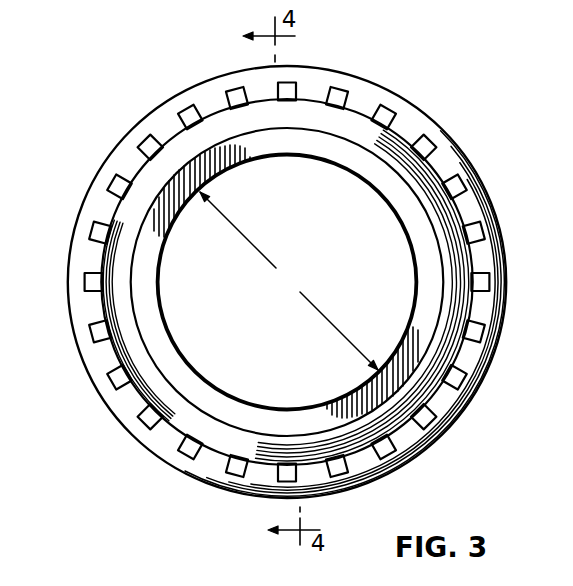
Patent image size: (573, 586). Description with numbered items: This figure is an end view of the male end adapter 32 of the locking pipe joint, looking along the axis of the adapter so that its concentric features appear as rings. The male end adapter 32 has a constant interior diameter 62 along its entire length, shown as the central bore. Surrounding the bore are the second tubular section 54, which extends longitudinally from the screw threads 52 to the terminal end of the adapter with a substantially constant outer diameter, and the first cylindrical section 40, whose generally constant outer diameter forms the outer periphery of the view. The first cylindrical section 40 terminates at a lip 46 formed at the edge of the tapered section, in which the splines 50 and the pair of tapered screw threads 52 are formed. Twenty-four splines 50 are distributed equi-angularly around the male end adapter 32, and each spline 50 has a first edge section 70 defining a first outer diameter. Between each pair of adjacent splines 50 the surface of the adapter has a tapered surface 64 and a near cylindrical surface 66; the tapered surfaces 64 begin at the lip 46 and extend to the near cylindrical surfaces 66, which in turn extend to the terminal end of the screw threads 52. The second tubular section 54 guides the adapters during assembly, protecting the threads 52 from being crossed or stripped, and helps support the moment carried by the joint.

The male end adapter 32 is at (127, 101).
The first cylindrical section 40 is at (496, 358).
The lip 46 is at (82, 212).
The splines 50 is at (437, 141).
The tapered screw threads 52 is at (160, 383).
The second tubular section 54 is at (440, 264).
The interior diameter 62 is at (289, 281).
The tapered surface 64 is at (372, 101).
The near cylindrical surface 66 is at (313, 100).
The first edge section 70 is at (490, 330).